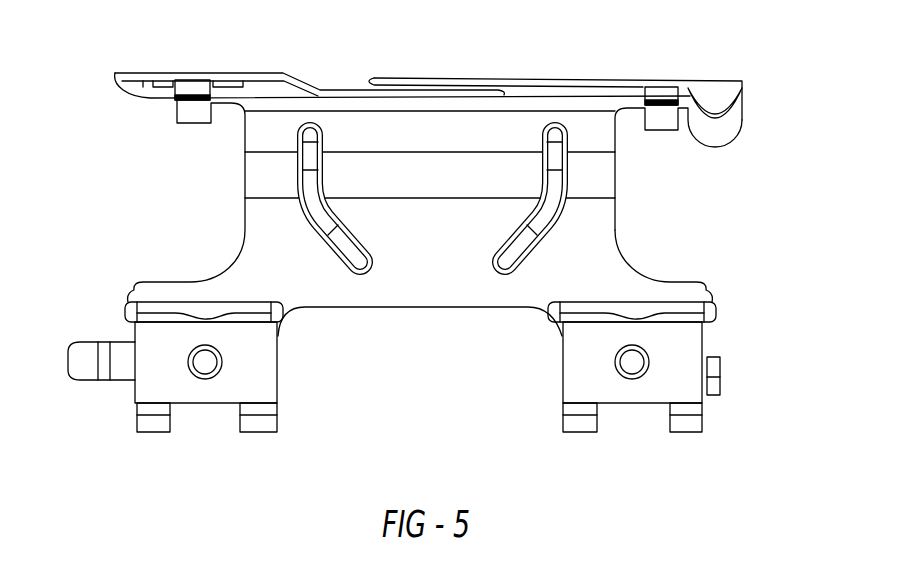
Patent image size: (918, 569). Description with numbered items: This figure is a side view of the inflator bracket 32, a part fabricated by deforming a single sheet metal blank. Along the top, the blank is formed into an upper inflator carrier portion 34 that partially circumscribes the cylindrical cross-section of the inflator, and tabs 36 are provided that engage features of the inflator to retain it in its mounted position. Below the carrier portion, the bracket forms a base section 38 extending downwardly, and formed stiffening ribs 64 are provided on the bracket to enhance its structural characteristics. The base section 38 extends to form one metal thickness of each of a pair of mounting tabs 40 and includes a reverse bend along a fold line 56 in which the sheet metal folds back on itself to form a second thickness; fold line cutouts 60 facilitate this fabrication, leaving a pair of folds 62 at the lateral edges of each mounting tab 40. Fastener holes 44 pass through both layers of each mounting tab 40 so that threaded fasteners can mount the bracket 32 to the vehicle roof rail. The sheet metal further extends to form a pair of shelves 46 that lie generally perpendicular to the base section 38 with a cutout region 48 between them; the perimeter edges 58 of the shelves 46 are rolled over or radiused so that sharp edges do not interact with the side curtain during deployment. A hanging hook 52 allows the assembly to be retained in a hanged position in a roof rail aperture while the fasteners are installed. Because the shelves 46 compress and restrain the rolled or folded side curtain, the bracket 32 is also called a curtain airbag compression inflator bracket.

The inflator bracket 32 is at (441, 76).
The upper inflator carrier portion 34 is at (548, 78).
The tabs 36 is at (190, 89).
The base section 38 is at (590, 247).
The mounting tabs 40 is at (282, 378).
The fastener holes 44 is at (213, 366).
The shelves 46 is at (163, 308).
The cutout region 48 is at (400, 307).
The hanging hook 52 is at (723, 387).
The fold line 56 is at (263, 430).
The perimeter edges 58 is at (130, 308).
The fold line cutouts 60 is at (620, 405).
The folds 62 is at (578, 428).
The stiffening ribs 64 is at (560, 166).